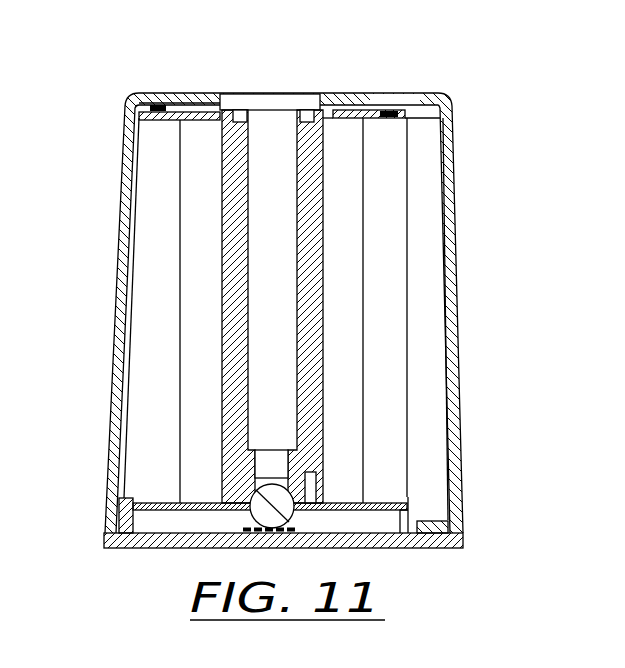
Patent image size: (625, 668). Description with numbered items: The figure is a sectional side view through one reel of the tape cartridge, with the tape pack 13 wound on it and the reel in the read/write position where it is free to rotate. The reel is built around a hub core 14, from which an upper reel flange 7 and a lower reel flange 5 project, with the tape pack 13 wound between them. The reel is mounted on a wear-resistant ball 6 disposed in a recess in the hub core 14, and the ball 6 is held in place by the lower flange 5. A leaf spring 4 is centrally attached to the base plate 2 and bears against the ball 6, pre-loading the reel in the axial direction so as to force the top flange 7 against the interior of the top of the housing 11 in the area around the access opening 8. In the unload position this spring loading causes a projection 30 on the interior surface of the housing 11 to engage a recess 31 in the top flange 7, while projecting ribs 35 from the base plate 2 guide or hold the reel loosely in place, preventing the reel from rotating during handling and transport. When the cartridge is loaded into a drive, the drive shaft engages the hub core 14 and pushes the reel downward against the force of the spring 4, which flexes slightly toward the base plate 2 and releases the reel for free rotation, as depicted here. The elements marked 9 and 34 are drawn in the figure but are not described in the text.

The base plate 2 is at (125, 548).
The leaf spring 4 is at (293, 527).
The lower reel flange 5 is at (162, 505).
The wear-resistant ball 6 is at (258, 503).
The upper reel flange 7 is at (372, 118).
The access opening 8 is at (220, 95).
The cap notch 9 is at (310, 110).
The housing 11 is at (119, 198).
The tape pack 13 is at (207, 183).
The hub core 14 is at (235, 298).
The projection 30 is at (157, 104).
The recess 31 is at (145, 106).
The notch 34 is at (248, 122).
The projecting ribs 35 is at (122, 517).